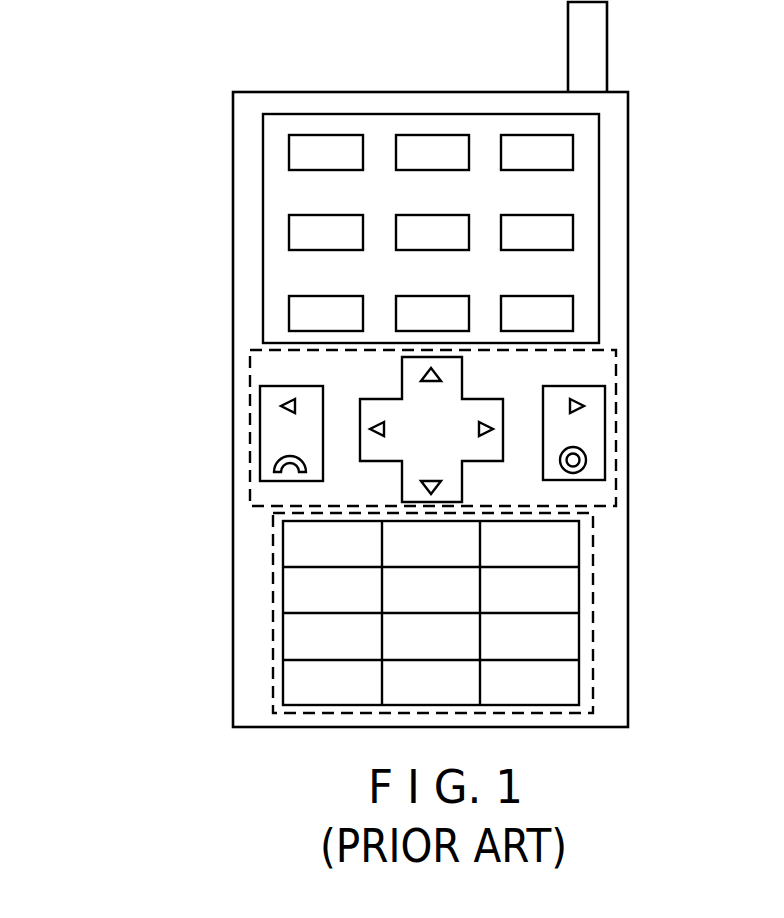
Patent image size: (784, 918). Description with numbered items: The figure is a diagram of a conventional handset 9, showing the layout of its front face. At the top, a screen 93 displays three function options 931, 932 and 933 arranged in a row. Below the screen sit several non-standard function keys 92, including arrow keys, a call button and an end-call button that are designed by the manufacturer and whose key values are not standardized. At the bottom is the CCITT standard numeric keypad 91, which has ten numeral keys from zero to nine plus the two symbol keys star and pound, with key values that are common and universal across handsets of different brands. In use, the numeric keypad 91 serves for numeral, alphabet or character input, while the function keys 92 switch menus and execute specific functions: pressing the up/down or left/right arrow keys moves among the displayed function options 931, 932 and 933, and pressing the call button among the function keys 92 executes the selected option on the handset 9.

The handset 9 is at (173, 131).
The display screen 93 is at (600, 158).
The function option 931 is at (318, 150).
The function option 932 is at (429, 150).
The function option 933 is at (538, 143).
The non-standard function keys 92 is at (248, 372).
The CCITT standard numeric keypad 91 is at (272, 548).